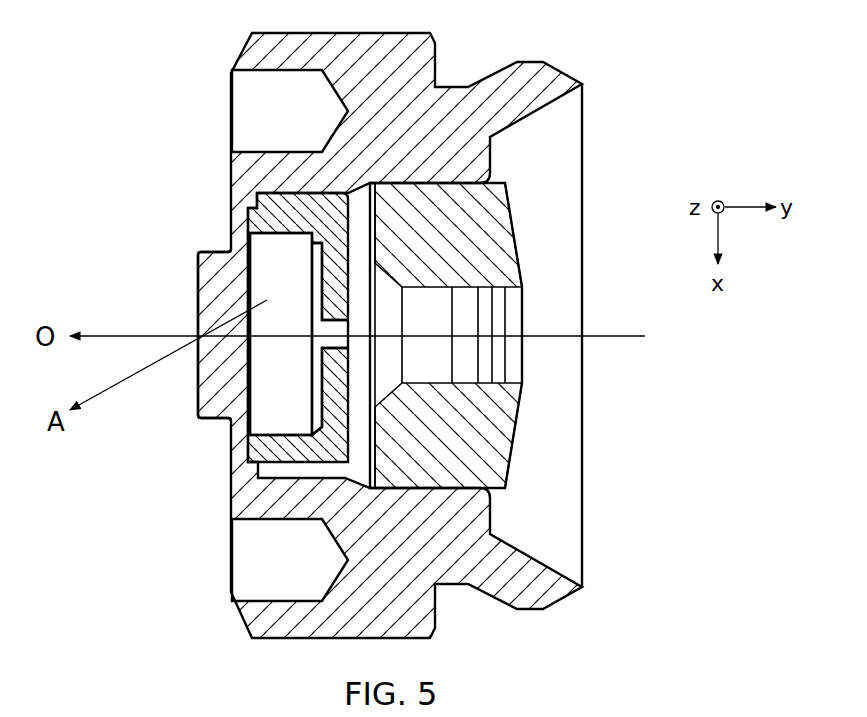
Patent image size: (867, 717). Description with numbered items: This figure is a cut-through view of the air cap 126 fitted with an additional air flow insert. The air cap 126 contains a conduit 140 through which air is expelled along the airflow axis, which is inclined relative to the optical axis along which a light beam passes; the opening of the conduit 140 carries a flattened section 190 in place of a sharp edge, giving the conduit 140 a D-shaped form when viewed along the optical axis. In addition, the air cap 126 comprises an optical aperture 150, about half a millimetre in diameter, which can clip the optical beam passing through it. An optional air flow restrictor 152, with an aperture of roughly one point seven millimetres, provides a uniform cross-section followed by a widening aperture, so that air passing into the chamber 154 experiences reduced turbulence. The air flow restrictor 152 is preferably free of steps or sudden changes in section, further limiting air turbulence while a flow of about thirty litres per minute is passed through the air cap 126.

The air cap 126 is at (587, 69).
The conduit 140 is at (205, 351).
The optical aperture 150 is at (330, 312).
The air flow restrictor 152 is at (481, 245).
The chamber 154 is at (304, 421).
The flattened section 190 is at (263, 340).